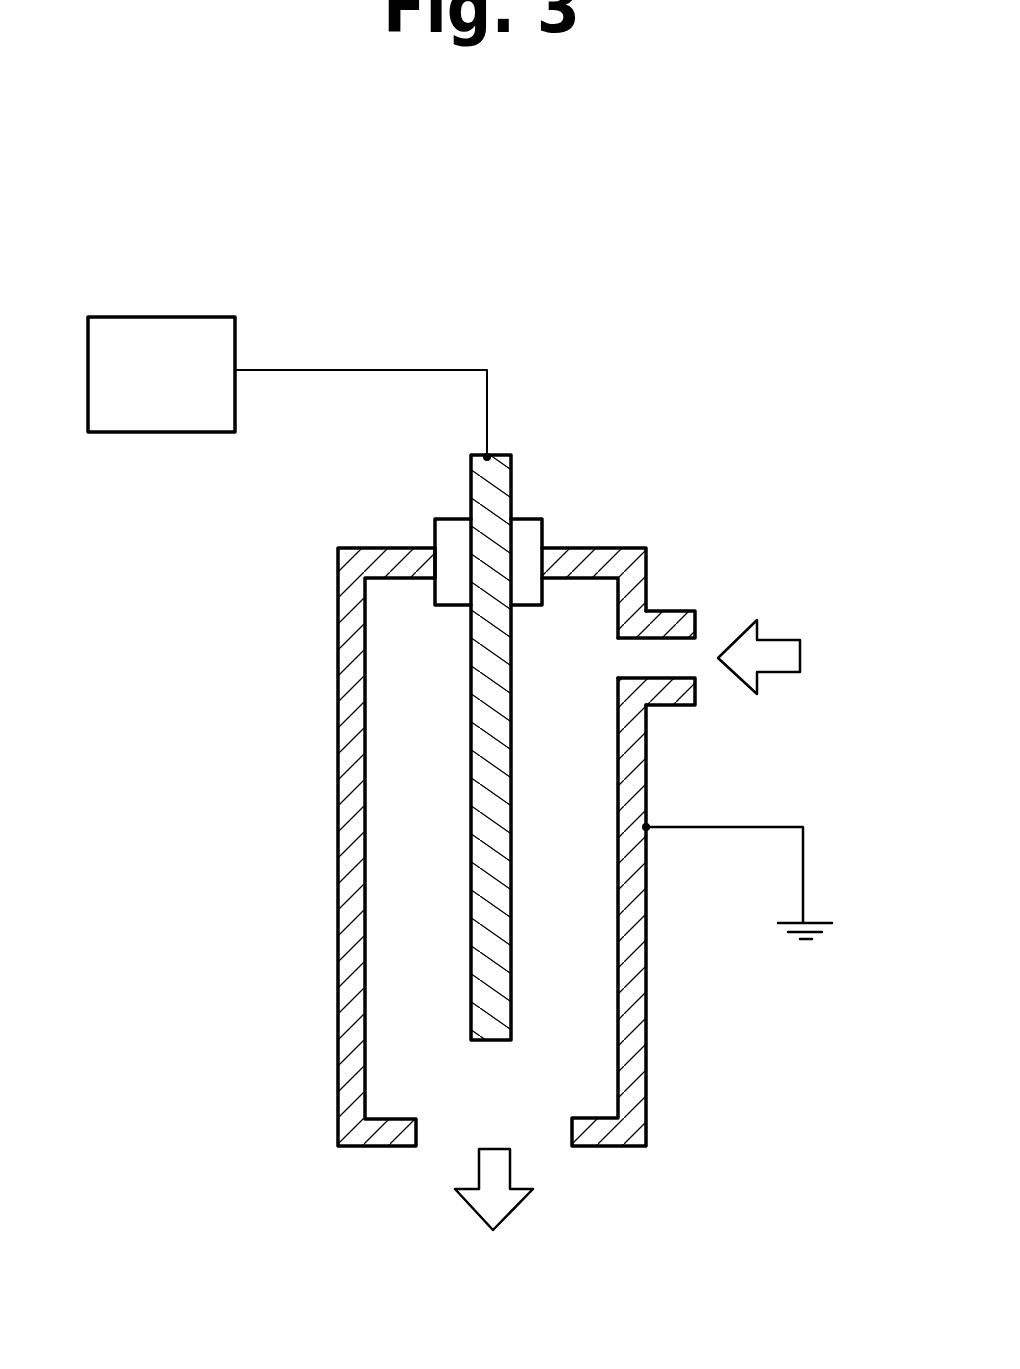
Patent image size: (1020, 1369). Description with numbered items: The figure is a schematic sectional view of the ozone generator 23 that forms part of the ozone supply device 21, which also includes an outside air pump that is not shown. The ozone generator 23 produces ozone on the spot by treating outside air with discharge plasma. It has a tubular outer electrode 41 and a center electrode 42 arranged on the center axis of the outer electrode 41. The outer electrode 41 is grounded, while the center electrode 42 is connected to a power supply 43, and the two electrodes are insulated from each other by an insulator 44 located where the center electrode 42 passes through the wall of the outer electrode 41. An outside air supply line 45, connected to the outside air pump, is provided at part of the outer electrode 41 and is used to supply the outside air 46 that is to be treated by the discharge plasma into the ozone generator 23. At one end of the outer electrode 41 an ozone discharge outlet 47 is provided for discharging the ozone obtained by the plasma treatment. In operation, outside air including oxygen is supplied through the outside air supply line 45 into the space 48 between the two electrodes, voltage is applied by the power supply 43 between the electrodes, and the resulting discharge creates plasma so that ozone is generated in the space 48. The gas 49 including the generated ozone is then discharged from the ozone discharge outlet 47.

The ozone supply device 21 is at (738, 385).
The ozone generator 23 is at (322, 622).
The outer electrode 41 is at (687, 881).
The center electrode 42 is at (513, 975).
The power supply 43 is at (187, 347).
The insulator 44 is at (543, 532).
The outside air supply line 45 is at (687, 662).
The outside air 46 is at (783, 637).
The ozone discharge outlet 47 is at (468, 1125).
The space 48 is at (430, 922).
The gas 49 is at (518, 1203).